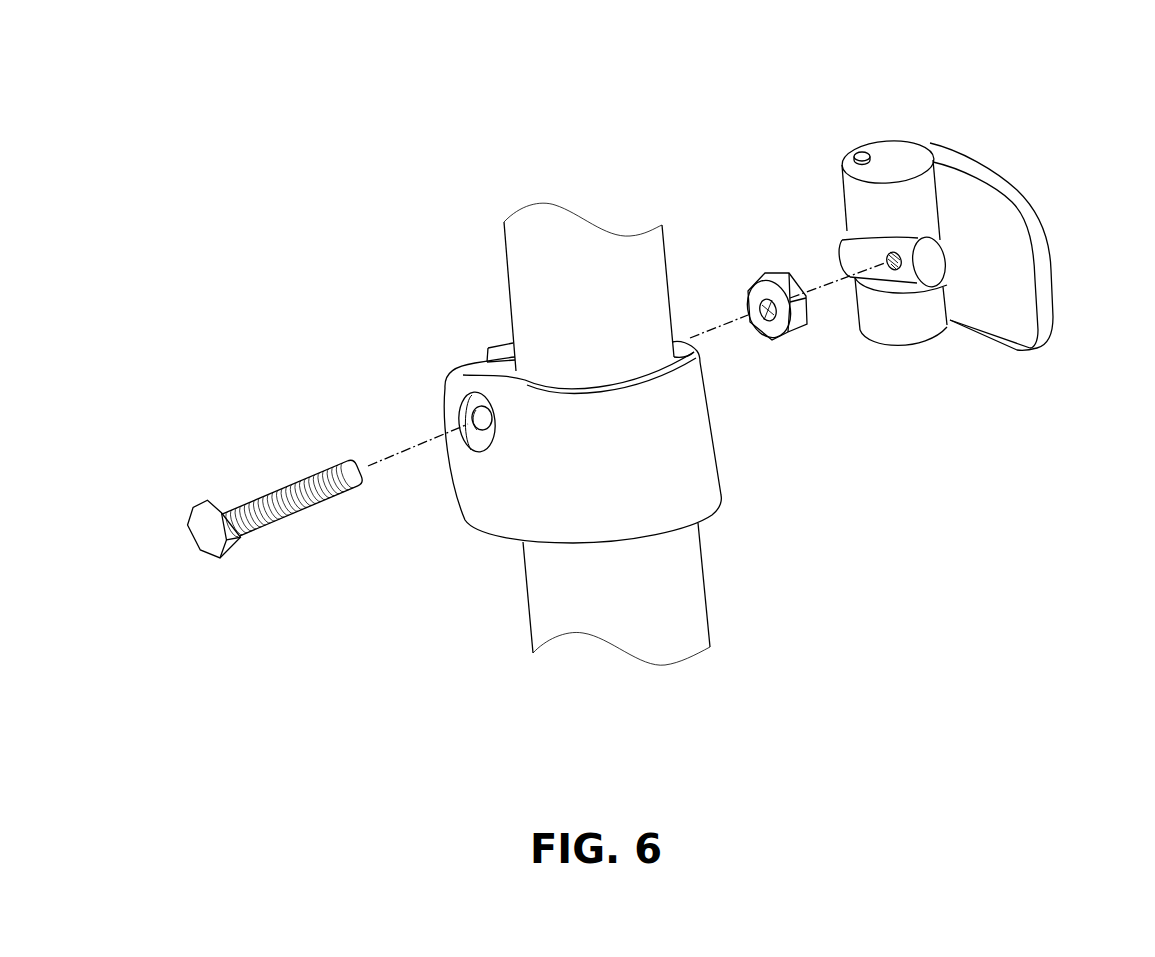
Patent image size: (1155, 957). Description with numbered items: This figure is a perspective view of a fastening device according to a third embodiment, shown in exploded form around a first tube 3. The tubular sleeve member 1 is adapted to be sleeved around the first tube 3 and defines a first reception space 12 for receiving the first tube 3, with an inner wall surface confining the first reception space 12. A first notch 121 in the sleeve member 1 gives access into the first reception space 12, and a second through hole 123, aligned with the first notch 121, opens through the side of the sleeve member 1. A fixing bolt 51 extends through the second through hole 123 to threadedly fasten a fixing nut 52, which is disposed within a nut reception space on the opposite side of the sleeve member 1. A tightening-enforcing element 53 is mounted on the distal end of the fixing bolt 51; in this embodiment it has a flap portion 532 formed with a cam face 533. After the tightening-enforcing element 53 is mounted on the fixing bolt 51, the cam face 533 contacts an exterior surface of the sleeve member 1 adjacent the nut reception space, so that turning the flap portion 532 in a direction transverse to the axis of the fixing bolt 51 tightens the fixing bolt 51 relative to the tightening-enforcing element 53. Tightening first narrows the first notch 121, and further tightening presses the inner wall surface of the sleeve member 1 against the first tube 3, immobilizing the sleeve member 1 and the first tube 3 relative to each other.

The tubular sleeve member 1 is at (1016, 140).
The first tube 3 is at (527, 242).
The first reception space 12 is at (692, 358).
The first notch 121 is at (503, 348).
The second through hole 123 is at (467, 422).
The fixing bolt 51 is at (665, 457).
The fixing nut 52 is at (768, 290).
The tightening-enforcing element 53 is at (897, 148).
The flap portion 532 is at (862, 210).
The cam face 533 is at (1000, 265).